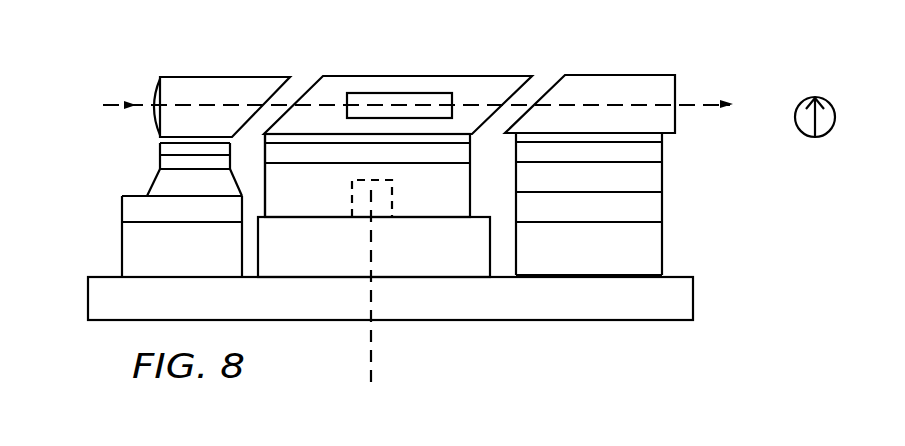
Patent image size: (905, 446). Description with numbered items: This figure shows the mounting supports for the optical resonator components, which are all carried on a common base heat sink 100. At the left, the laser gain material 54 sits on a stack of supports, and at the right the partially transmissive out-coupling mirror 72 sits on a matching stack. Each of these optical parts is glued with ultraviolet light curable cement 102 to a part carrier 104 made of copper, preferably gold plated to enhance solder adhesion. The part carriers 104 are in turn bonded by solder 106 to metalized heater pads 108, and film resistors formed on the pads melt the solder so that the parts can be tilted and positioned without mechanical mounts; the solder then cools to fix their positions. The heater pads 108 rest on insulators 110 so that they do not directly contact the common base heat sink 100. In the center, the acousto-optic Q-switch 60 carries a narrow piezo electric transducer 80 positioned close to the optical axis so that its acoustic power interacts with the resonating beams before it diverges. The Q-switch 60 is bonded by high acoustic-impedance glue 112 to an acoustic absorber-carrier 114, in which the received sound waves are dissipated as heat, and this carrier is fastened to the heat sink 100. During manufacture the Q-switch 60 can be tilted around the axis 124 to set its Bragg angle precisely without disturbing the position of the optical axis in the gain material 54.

The laser gain material 54 is at (222, 107).
The Q-switch 60 is at (354, 66).
The out-coupling mirror 72 is at (590, 104).
The piezo electric transducer 80 is at (413, 101).
The common base heat sink 100 is at (677, 304).
The ultraviolet light curable cement 102 is at (163, 143).
The part carrier 104 is at (163, 160).
The solder 106 is at (165, 176).
The heater pad 108 is at (133, 210).
The insulator 110 is at (140, 243).
The high acoustic-impedance glue 112 is at (270, 140).
The acoustic absorber-carrier 114 is at (432, 204).
The axis 124 is at (373, 310).